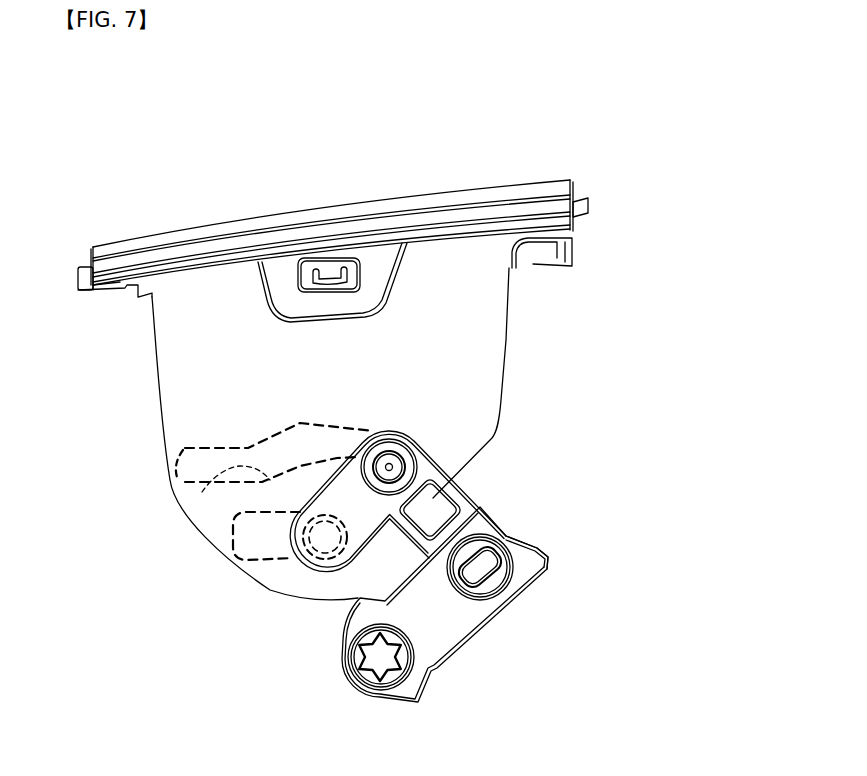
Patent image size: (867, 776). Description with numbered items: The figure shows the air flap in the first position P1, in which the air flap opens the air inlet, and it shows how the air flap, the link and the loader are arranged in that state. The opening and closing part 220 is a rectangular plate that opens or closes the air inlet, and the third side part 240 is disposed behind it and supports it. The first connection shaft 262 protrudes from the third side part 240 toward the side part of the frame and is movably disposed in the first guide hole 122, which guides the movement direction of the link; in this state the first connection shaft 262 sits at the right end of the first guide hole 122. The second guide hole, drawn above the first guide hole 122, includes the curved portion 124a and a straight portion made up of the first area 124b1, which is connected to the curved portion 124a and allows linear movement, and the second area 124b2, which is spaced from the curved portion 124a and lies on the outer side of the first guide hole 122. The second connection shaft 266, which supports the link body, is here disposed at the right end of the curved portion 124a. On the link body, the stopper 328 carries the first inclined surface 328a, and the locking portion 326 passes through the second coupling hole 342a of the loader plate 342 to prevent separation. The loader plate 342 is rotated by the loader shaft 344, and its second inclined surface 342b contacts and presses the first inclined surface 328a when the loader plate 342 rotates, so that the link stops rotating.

The first position P1 is at (492, 124).
The opening and closing part 220 is at (262, 226).
The third side part 240 is at (172, 373).
The curved portion 124a is at (310, 424).
The second area 124b2 is at (178, 452).
The first area 124b1 is at (233, 466).
The first guide hole 122 is at (233, 530).
The first connection shaft 262 is at (300, 540).
The second connection shaft 266 is at (416, 470).
The stopper 328 is at (450, 477).
The first inclined surface 328a is at (473, 522).
The loader plate 342 is at (453, 606).
The second coupling hole 342a is at (502, 570).
The second inclined surface 342b is at (552, 530).
The locking portion 326 is at (485, 574).
The loader shaft 344 is at (372, 657).